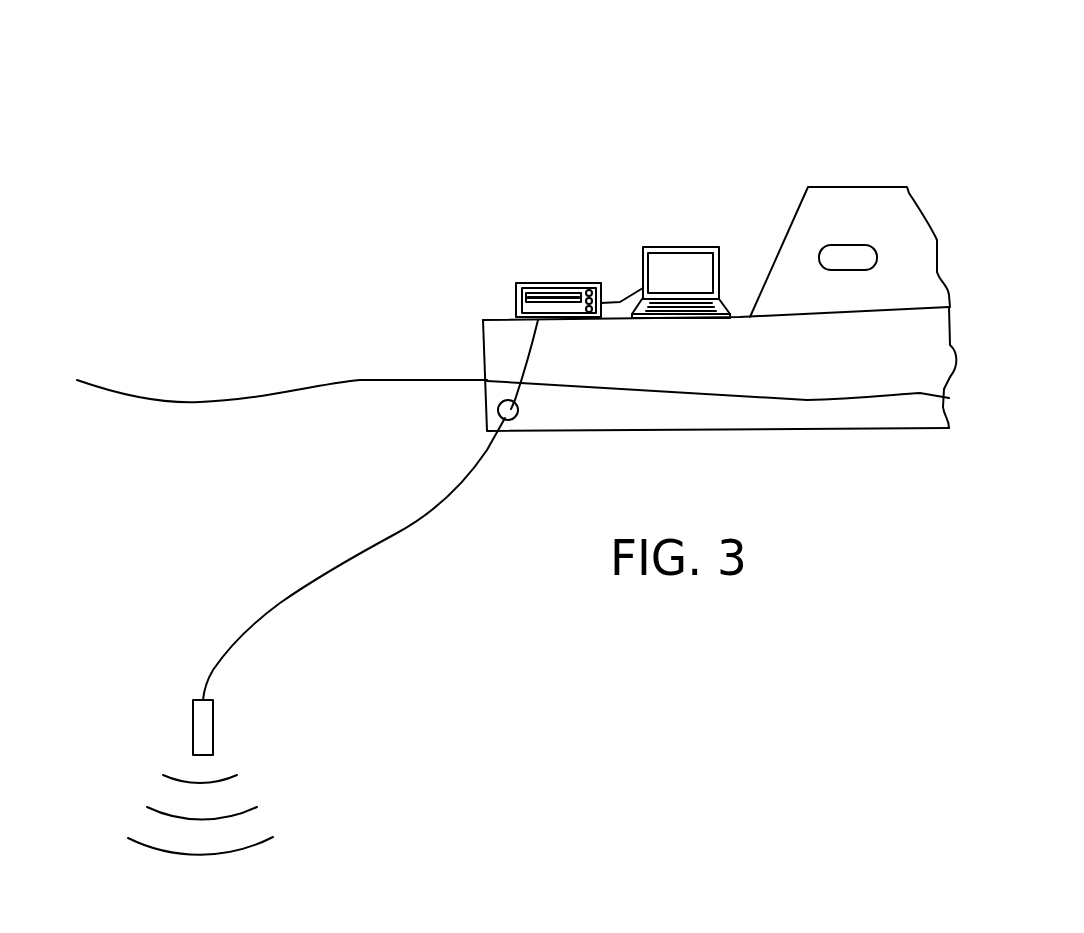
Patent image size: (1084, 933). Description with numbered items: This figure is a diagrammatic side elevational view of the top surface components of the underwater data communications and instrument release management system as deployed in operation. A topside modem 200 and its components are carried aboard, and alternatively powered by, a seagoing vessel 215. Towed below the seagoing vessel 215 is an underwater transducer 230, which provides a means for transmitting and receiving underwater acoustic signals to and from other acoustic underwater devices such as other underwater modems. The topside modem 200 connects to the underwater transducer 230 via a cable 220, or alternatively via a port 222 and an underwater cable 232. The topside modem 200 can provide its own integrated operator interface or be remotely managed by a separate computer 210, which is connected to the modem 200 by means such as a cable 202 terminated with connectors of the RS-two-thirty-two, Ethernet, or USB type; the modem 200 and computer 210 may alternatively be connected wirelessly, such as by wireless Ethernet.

The topside modem 200 is at (545, 247).
The cable 202 is at (626, 288).
The computer 210 is at (689, 203).
The seagoing vessel 215 is at (866, 115).
The cable 220 is at (522, 358).
The port 222 is at (500, 405).
The transducer 230 is at (193, 730).
The underwater cable 232 is at (255, 622).